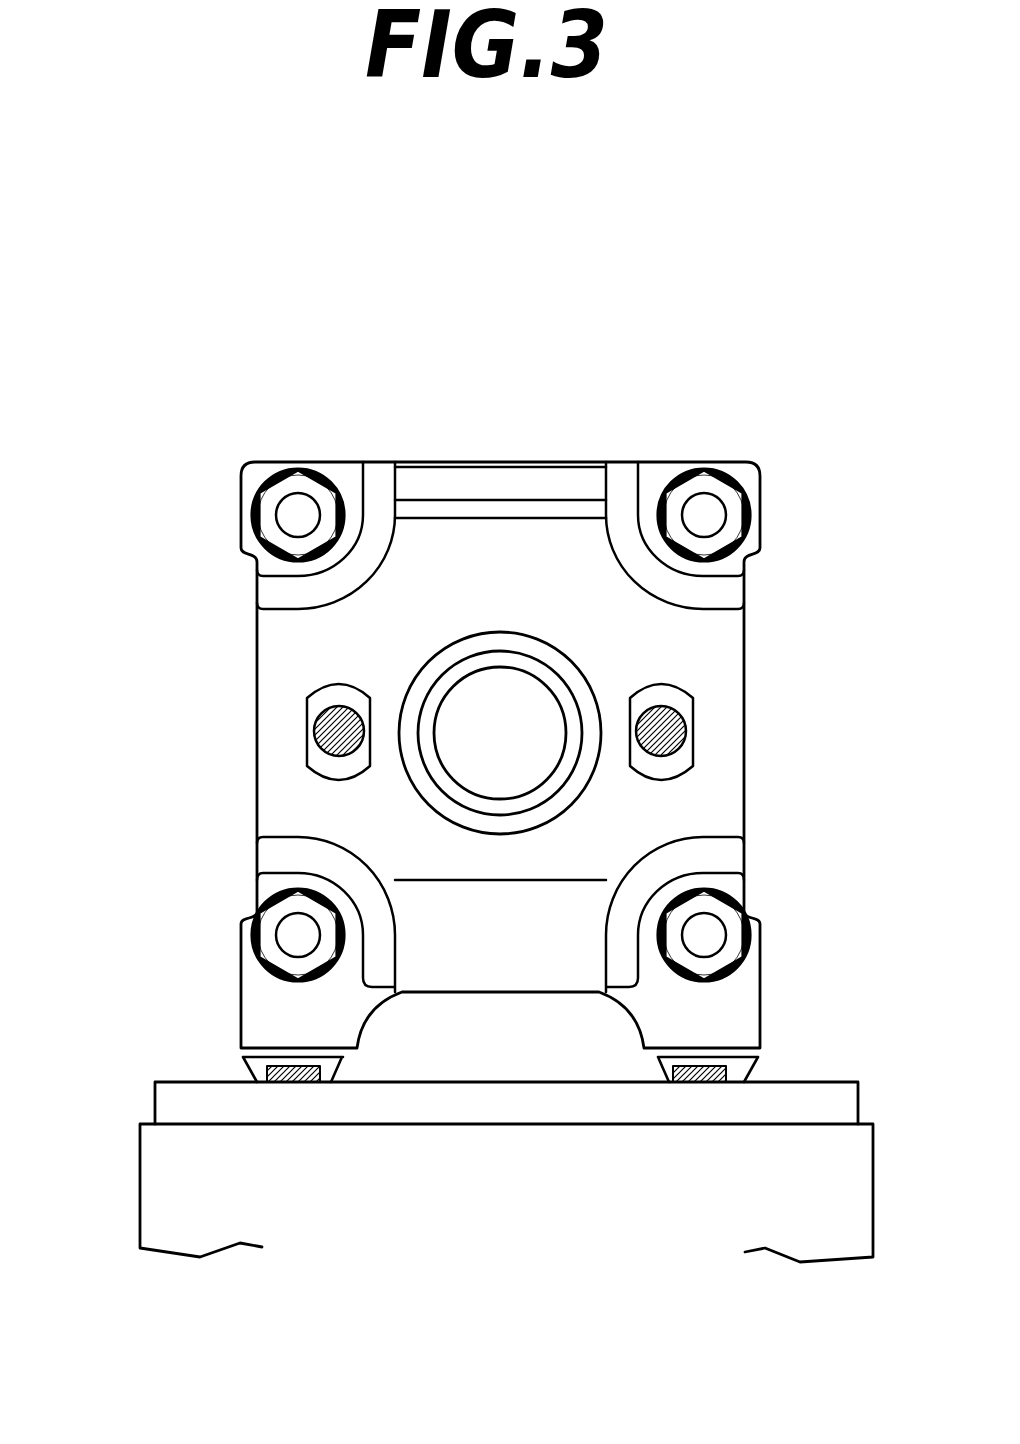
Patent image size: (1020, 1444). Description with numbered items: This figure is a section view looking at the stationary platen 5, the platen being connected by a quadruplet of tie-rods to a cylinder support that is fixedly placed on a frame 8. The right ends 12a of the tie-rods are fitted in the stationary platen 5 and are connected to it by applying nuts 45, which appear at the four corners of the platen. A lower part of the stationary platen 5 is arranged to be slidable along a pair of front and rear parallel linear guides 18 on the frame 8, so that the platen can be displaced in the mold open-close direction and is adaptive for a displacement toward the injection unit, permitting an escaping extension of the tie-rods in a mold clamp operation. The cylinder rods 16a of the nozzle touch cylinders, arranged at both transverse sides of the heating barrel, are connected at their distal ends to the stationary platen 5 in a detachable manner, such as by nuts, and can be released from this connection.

The stationary platen 5 is at (776, 370).
The frame 8 is at (810, 1103).
The right ends of the tie-rods 12a is at (300, 513).
The cylinder rods 16a is at (310, 730).
The linear guides 18 is at (295, 1083).
The nuts 45 is at (266, 510).